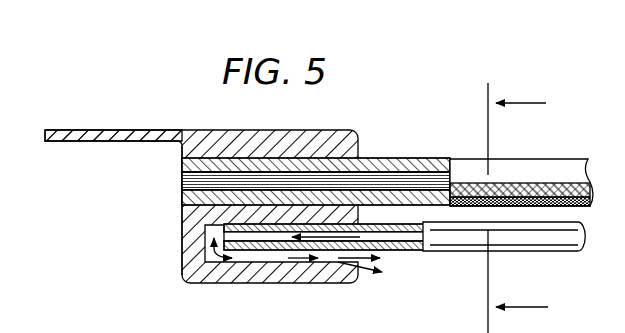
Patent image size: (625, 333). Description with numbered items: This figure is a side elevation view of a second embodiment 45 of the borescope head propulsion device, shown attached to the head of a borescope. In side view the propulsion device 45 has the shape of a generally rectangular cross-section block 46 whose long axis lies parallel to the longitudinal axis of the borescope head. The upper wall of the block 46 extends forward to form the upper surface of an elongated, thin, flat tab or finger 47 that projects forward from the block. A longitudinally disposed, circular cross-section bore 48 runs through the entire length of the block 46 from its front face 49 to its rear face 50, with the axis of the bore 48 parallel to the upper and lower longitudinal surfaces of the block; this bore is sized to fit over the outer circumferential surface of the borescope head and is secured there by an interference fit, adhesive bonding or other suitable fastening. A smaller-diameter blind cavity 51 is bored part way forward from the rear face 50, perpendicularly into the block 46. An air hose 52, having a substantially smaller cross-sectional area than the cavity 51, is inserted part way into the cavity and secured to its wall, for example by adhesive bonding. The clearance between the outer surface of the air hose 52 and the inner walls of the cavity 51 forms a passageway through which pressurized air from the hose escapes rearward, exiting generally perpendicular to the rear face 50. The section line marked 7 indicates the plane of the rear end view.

The second embodiment of the borescope head propulsion device 45 is at (347, 118).
The block 46 is at (240, 127).
The finger 47 is at (116, 129).
The bore 48 is at (182, 205).
The front face 49 is at (182, 258).
The rear face 50 is at (357, 152).
The blind cavity 51 is at (358, 266).
The air hose 52 is at (433, 252).
The section line 7 is at (525, 208).